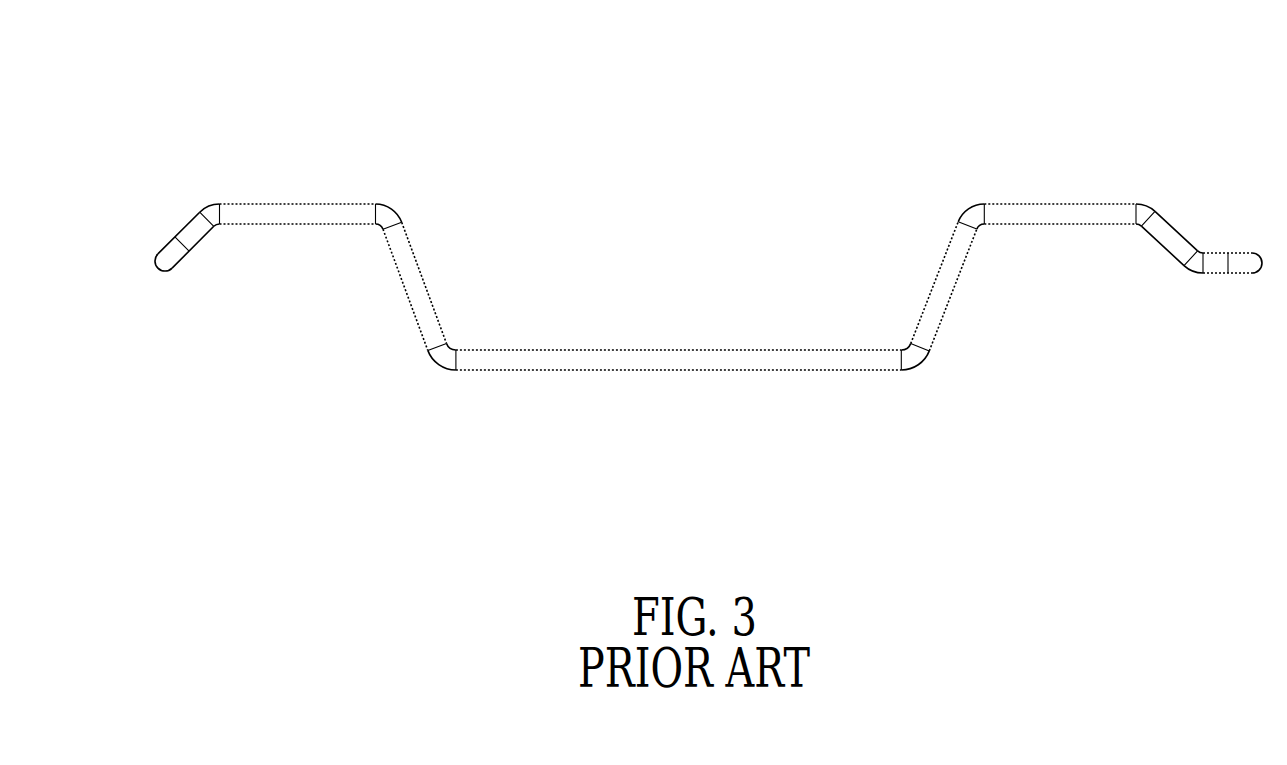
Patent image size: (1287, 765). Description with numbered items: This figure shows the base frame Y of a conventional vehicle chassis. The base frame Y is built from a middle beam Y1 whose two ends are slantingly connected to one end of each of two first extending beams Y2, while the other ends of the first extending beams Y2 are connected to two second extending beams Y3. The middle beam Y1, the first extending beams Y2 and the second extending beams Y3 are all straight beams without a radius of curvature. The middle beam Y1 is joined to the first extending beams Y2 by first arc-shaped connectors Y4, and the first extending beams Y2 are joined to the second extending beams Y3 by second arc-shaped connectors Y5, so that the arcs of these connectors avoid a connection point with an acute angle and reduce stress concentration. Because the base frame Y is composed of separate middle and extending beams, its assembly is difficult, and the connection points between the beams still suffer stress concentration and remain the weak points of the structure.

The base frame Y is at (335, 161).
The middle beam Y1 is at (552, 358).
The first extending beam Y2 is at (415, 292).
The second extending beam Y3 is at (267, 214).
The first arc-shaped connector Y4 is at (443, 358).
The second arc-shaped connector Y5 is at (388, 212).